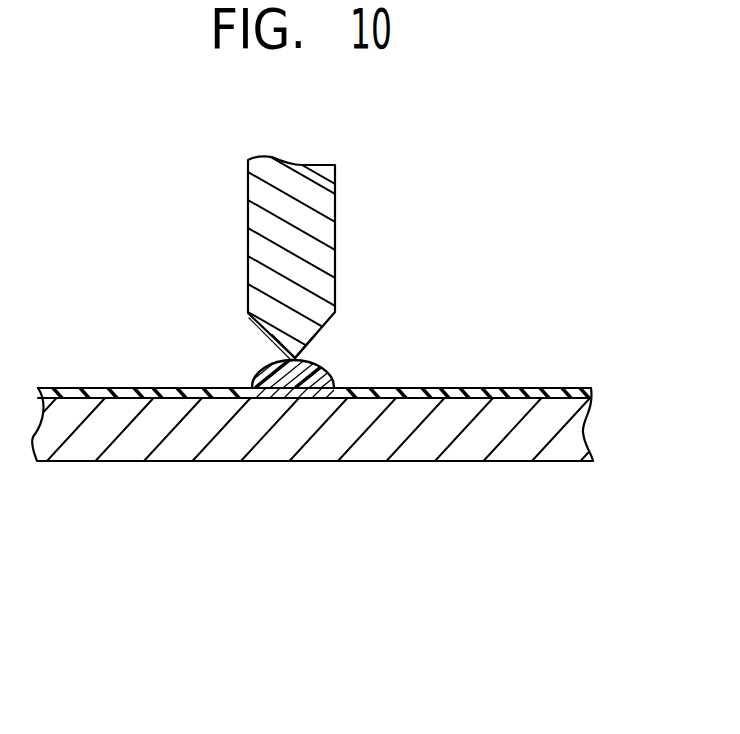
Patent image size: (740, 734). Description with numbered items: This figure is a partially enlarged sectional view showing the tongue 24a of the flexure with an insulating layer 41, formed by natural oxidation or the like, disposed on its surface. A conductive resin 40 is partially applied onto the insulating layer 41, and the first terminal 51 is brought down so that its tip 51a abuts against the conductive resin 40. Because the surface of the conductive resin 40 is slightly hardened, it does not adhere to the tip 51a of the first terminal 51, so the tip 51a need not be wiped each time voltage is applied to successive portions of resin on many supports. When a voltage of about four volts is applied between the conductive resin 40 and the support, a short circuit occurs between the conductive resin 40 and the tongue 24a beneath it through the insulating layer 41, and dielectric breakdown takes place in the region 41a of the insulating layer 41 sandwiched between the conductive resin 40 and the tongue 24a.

The tongue 24a is at (472, 430).
The insulating layer 41 is at (120, 388).
The region of the insulating layer 41a is at (288, 397).
The conductive resin 40 is at (257, 383).
The first terminal 51 is at (322, 220).
The tip of the first terminal 51a is at (298, 359).